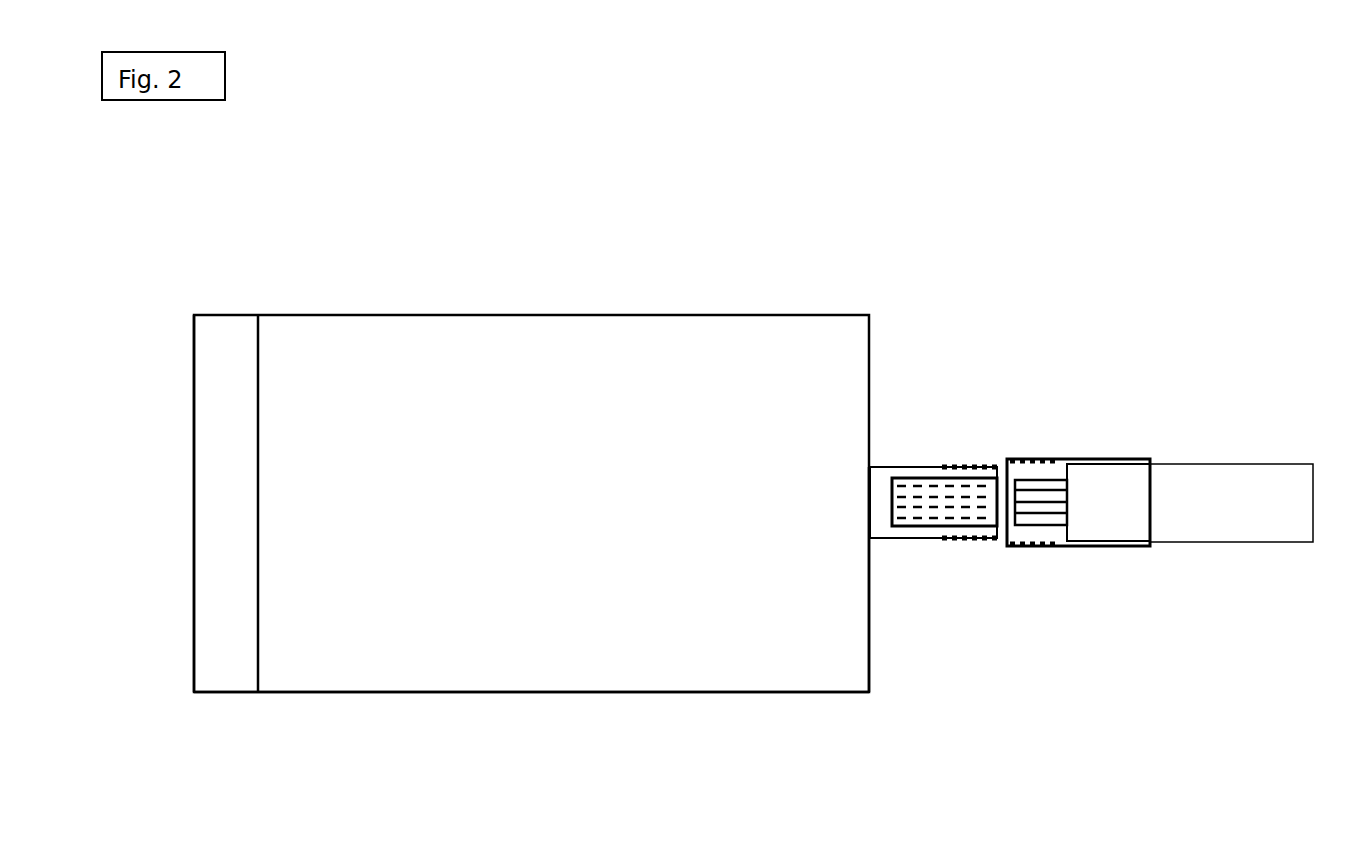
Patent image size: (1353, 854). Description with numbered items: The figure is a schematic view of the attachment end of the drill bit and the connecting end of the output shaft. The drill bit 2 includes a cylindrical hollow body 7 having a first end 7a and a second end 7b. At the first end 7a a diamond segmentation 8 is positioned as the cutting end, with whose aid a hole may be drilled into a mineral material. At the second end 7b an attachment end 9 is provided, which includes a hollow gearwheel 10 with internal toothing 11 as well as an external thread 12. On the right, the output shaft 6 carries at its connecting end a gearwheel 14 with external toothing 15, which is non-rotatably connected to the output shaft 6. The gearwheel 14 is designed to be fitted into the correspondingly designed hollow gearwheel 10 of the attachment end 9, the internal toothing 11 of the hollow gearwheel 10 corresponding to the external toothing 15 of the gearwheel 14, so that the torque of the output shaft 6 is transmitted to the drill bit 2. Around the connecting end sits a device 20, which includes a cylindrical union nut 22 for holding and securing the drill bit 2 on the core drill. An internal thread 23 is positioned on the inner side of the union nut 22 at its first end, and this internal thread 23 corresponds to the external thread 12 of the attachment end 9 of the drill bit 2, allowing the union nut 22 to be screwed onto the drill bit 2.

The drill bit 2 is at (438, 333).
The output shaft 6 is at (1212, 527).
The cylindrical hollow body 7 is at (524, 673).
The first end 7a is at (260, 340).
The second end 7b is at (869, 653).
The diamond segmentation 8 is at (238, 677).
The attachment end 9 is at (972, 532).
The hollow gearwheel 10 is at (930, 486).
The internal toothing 11 is at (924, 518).
The external thread 12 is at (969, 465).
The gearwheel 14 is at (1029, 483).
The external toothing 15 is at (1056, 483).
The device 20 is at (1129, 394).
The union nut 22 is at (1121, 548).
The internal thread 23 is at (1037, 548).